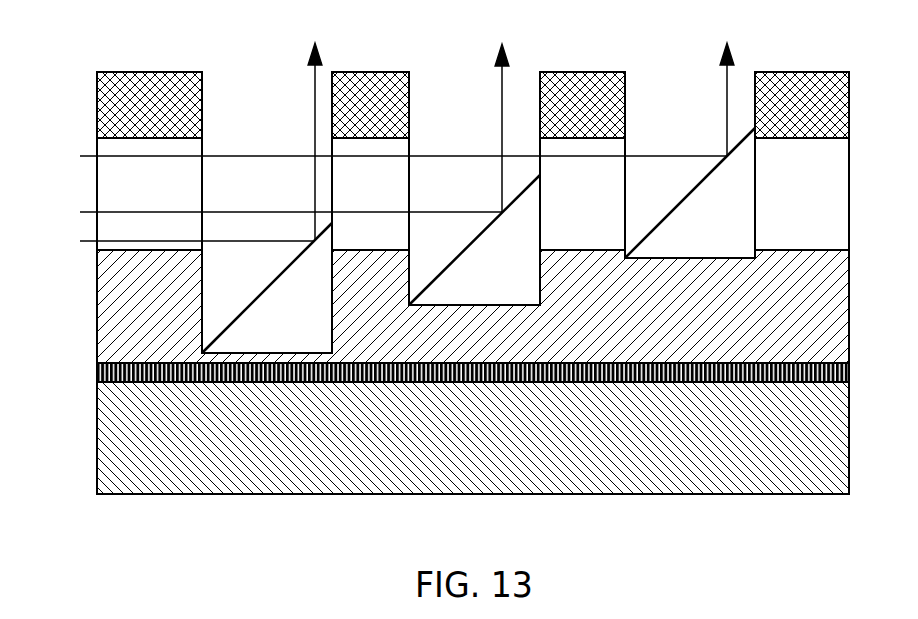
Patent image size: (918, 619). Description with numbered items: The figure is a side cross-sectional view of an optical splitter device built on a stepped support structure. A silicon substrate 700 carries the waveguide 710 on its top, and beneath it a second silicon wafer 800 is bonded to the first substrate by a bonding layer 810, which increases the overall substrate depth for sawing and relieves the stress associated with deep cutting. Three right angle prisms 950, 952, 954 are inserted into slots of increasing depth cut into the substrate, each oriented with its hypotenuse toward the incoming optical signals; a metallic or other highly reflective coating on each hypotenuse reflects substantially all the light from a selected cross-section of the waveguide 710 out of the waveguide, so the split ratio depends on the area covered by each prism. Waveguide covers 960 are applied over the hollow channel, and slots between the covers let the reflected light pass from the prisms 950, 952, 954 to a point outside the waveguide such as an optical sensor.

The waveguide cover 960 is at (95, 112).
The waveguide 710 is at (95, 198).
The semiconductor layer 700 is at (95, 310).
The bonding layer 810 is at (95, 375).
The silicon wafer 800 is at (95, 444).
The prism 950 is at (321, 332).
The prism 952 is at (528, 284).
The prism 954 is at (743, 236).